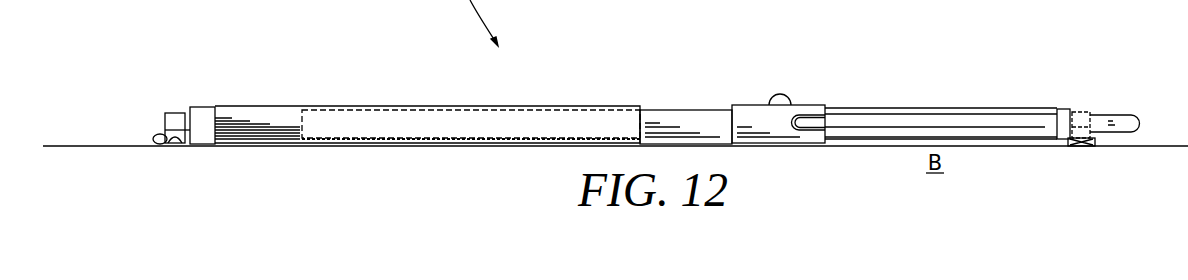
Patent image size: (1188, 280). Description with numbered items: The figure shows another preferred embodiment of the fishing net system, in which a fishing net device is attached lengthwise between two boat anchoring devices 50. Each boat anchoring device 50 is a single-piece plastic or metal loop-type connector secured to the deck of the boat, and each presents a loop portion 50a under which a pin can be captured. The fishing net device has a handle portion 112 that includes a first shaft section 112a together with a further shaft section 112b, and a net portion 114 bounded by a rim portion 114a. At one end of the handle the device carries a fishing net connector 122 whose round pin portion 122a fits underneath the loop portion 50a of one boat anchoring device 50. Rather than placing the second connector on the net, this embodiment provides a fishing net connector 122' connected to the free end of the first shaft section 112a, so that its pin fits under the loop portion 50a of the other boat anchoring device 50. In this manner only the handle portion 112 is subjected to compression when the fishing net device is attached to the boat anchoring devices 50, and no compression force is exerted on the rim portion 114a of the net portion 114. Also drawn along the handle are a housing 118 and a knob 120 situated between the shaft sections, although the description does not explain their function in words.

The boat anchoring device 50 is at (160, 150).
The loop portion 50a is at (173, 113).
The handle portion 112 is at (286, 100).
The first shaft section 112a is at (655, 108).
The intermediate portion of elongate body 112b is at (420, 104).
The net portion 114 is at (1113, 108).
The rim portion 114a is at (880, 118).
The housing 118 is at (747, 105).
The knob 120 is at (781, 94).
The fishing net connector 122 is at (187, 88).
The round pin portion 122a is at (158, 135).
The fishing net connector 122' is at (1037, 95).